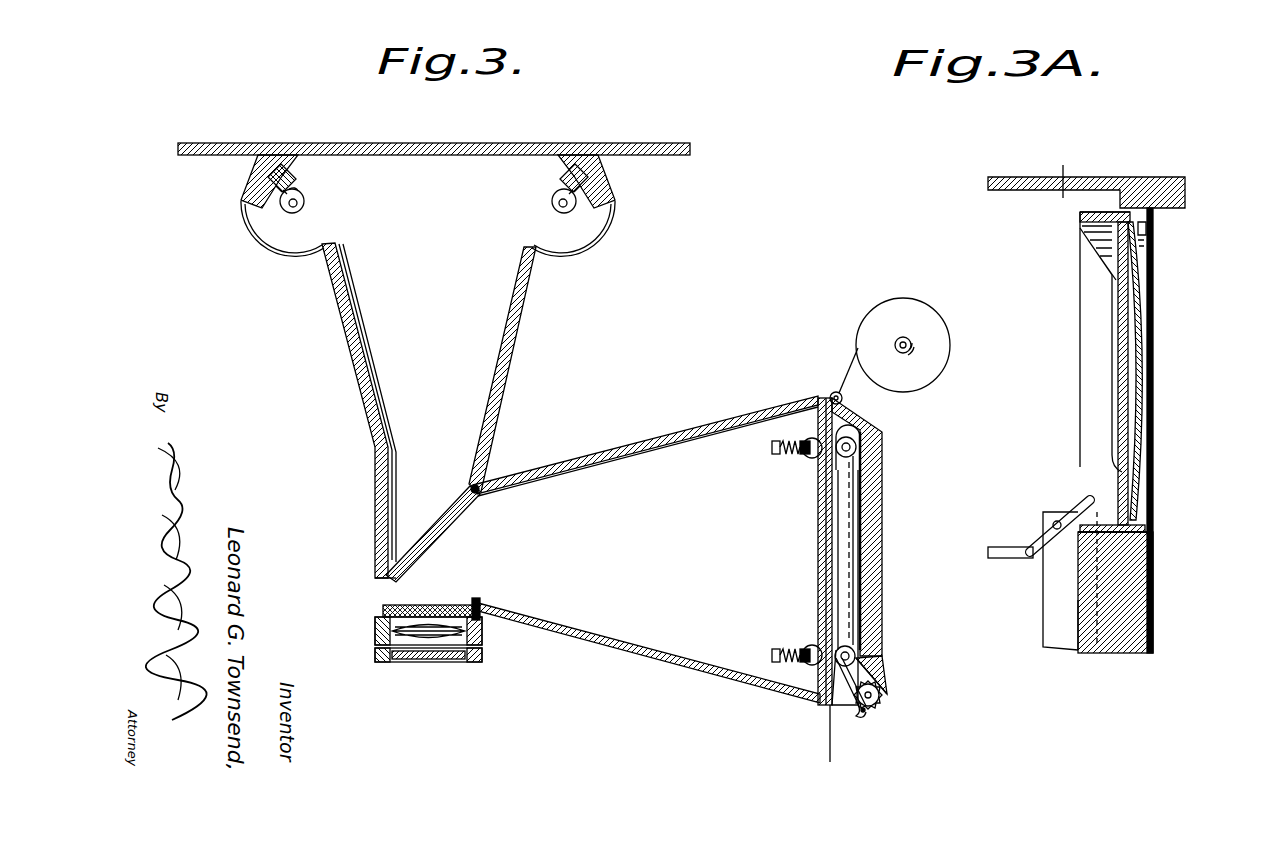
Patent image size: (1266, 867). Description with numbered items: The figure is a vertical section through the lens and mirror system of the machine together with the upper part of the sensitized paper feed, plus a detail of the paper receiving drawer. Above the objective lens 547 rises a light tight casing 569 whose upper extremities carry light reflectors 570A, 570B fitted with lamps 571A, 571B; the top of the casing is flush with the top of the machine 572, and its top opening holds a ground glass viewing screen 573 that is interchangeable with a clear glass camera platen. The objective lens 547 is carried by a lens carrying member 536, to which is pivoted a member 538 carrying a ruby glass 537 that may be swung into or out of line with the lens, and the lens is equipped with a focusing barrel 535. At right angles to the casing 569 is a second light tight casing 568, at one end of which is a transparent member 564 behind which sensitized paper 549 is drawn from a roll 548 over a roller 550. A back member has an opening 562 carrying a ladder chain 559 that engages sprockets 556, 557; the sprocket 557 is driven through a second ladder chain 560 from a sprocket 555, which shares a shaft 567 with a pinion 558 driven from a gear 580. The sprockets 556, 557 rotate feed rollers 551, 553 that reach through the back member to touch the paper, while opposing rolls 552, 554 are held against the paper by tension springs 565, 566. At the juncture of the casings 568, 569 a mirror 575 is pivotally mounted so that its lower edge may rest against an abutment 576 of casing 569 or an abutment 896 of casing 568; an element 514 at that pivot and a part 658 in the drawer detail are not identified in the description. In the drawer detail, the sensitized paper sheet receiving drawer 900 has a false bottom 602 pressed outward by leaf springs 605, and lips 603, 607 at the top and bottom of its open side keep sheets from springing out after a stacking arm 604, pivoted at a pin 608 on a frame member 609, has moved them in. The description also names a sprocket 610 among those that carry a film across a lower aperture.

In FIG. 3, the ground glass viewing screen 573 is at (440, 149).
In FIG. 3, the top of the machine 572 is at (282, 150).
In FIG. 3, the light reflector 570A is at (290, 259).
In FIG. 3, the light reflector 570B is at (603, 247).
In FIG. 3, the lamp 571A is at (305, 199).
In FIG. 3, the lamp 571B is at (554, 198).
In FIG. 3, the light tight casing 569 is at (512, 359).
In FIG. 3, the pivot 514 is at (480, 486).
In FIG. 3, the mirror 575 is at (448, 517).
In FIG. 3, the abutment 576 is at (388, 579).
In FIG. 3, the second light tight casing 568 is at (655, 445).
In FIG. 3, the abutment 896 is at (497, 589).
In FIG. 3, the focusing barrel 535 is at (388, 607).
In FIG. 3, the objective lens 547 is at (378, 632).
In FIG. 3, the lens carrying member 536 is at (482, 637).
In FIG. 3, the member carrying ruby glass 538 is at (482, 658).
In FIG. 3, the ruby glass 537 is at (440, 661).
In FIG. 3, the transparent member 564 is at (818, 586).
In FIG. 3, the opposing roll 552 is at (803, 461).
In FIG. 3, the tension spring 566 is at (795, 452).
In FIG. 3, the opposing roll 554 is at (806, 646).
In FIG. 3, the roller 550 is at (829, 396).
In FIG. 3, the tension spring 565 is at (883, 494).
In FIG. 3, the feed roller 551 is at (853, 442).
In FIG. 3, the sprocket 556 is at (858, 448).
In FIG. 3, the opening 562 is at (856, 523).
In FIG. 3, the ladder chain 559 is at (852, 558).
In FIG. 3, the feed roller 553 is at (856, 645).
In FIG. 3, the sprocket 557 is at (857, 657).
In FIG. 3, the second ladder chain 560 is at (866, 668).
In FIG. 3, the sprocket 555 is at (886, 691).
In FIG. 3, the pinion 558 is at (890, 698).
In FIG. 3, the gear 580 is at (878, 706).
In FIG. 3, the shaft 567 is at (864, 712).
In FIG. 3, the roll 548 is at (905, 296).
In FIG. 3, the sensitized paper 549 is at (852, 348).
In FIG. 3A, the sensitized paper 549 is at (1060, 176).
In FIG. 3A, the mounting plate 658 is at (1158, 172).
In FIG. 3A, the sensitized paper sheet receiving drawer 900 is at (1080, 376).
In FIG. 3A, the lip 603 is at (1083, 237).
In FIG. 3A, the stacking arm 604 is at (1086, 262).
In FIG. 3A, the leaf springs 605 is at (1138, 290).
In FIG. 3A, the false bottom 602 is at (1126, 470).
In FIG. 3A, the lip 607 is at (1090, 505).
In FIG. 3A, the pin 608 is at (1053, 523).
In FIG. 3A, the frame member 609 is at (1043, 588).
In FIG. 3A, the sprocket 610 is at (1078, 615).